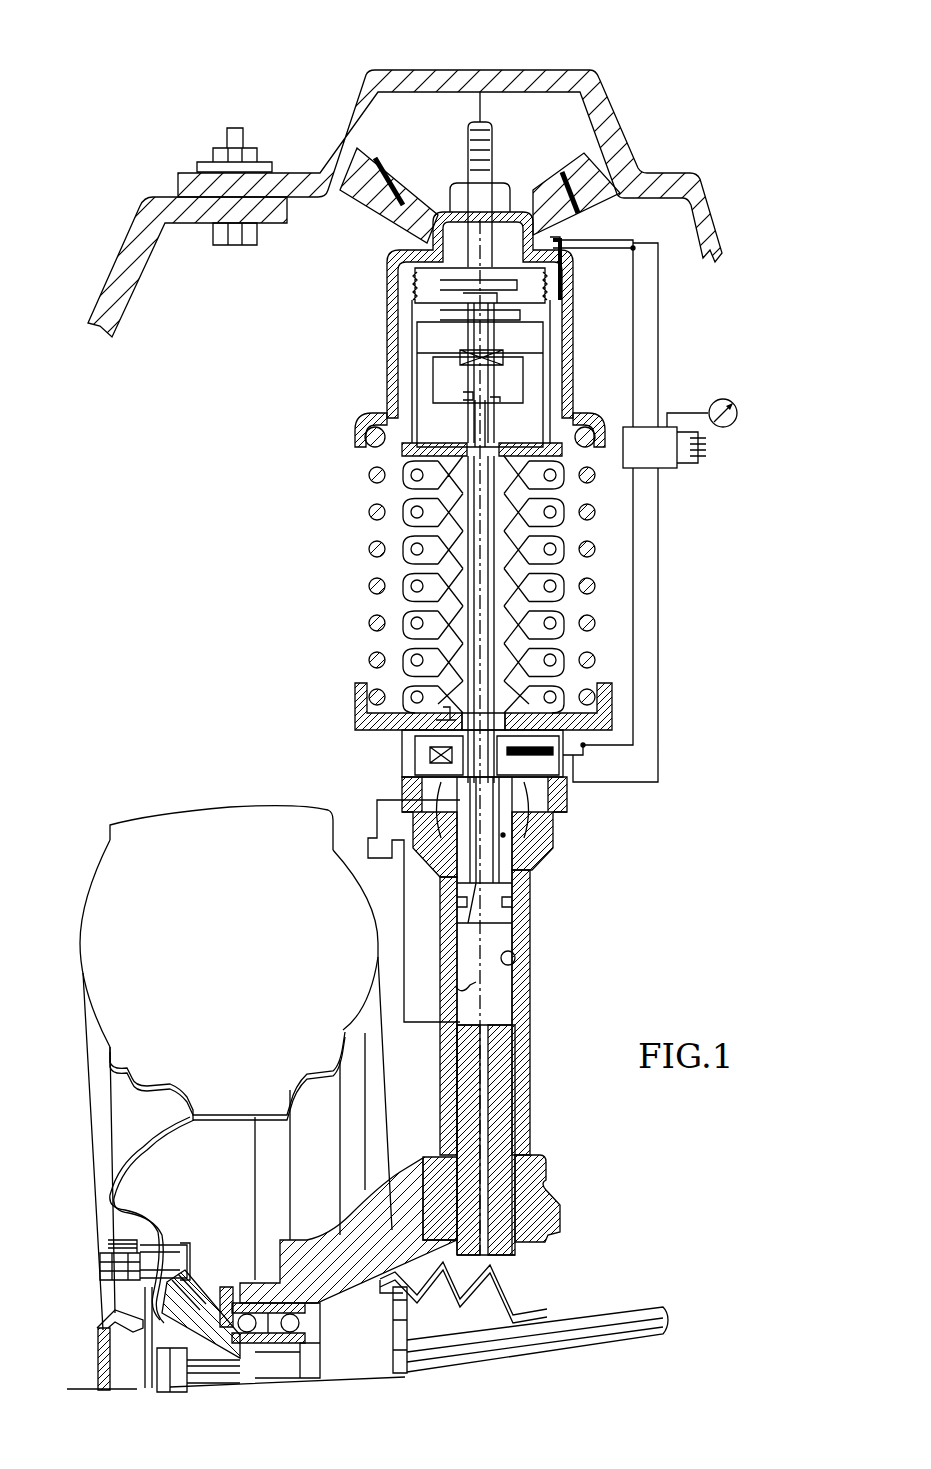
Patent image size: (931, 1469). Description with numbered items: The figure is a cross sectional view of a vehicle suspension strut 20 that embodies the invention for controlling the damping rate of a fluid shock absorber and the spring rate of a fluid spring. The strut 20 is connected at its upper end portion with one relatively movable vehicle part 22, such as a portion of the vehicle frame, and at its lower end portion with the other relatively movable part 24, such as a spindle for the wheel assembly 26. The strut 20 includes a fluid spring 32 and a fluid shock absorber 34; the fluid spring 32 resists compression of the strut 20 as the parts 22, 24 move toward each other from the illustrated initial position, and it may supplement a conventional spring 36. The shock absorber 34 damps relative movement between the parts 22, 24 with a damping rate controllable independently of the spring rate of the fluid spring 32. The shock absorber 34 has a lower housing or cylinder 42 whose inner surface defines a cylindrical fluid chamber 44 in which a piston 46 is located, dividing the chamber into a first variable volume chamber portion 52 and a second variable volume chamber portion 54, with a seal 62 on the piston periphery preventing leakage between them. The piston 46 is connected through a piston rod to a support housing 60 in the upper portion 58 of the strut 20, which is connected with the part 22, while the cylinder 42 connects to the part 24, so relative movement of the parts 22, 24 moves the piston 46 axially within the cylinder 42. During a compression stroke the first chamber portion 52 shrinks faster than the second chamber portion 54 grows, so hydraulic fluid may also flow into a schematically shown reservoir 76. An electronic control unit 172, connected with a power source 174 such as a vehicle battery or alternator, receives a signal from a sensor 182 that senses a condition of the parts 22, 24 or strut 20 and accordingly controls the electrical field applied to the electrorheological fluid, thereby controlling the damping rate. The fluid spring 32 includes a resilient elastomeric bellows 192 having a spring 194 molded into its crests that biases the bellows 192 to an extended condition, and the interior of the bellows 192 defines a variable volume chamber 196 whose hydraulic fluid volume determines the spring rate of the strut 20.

The vehicle suspension strut 20 is at (676, 371).
The relatively movable vehicle part 22 is at (143, 233).
The relatively movable vehicle part 24 is at (533, 1207).
The wheel assembly 26 is at (78, 1068).
The fluid spring 32 is at (578, 568).
The fluid shock absorber 34 is at (540, 922).
The conventional spring 36 is at (583, 508).
The cylinder 42 is at (520, 1012).
The fluid chamber 44 is at (512, 968).
The piston 46 is at (495, 889).
The first variable volume chamber portion 52 is at (455, 986).
The second variable volume chamber portion 54 is at (505, 833).
The upper portion 58 is at (382, 353).
The support housing 60 is at (390, 387).
The seal 62 is at (497, 1185).
The reservoir 76 is at (372, 848).
The electronic control unit 172 is at (630, 435).
The power source 174 is at (722, 461).
The sensor 182 is at (728, 401).
The bellows 192 is at (394, 557).
The spring 194 is at (418, 620).
The variable volume chamber 196 is at (447, 718).